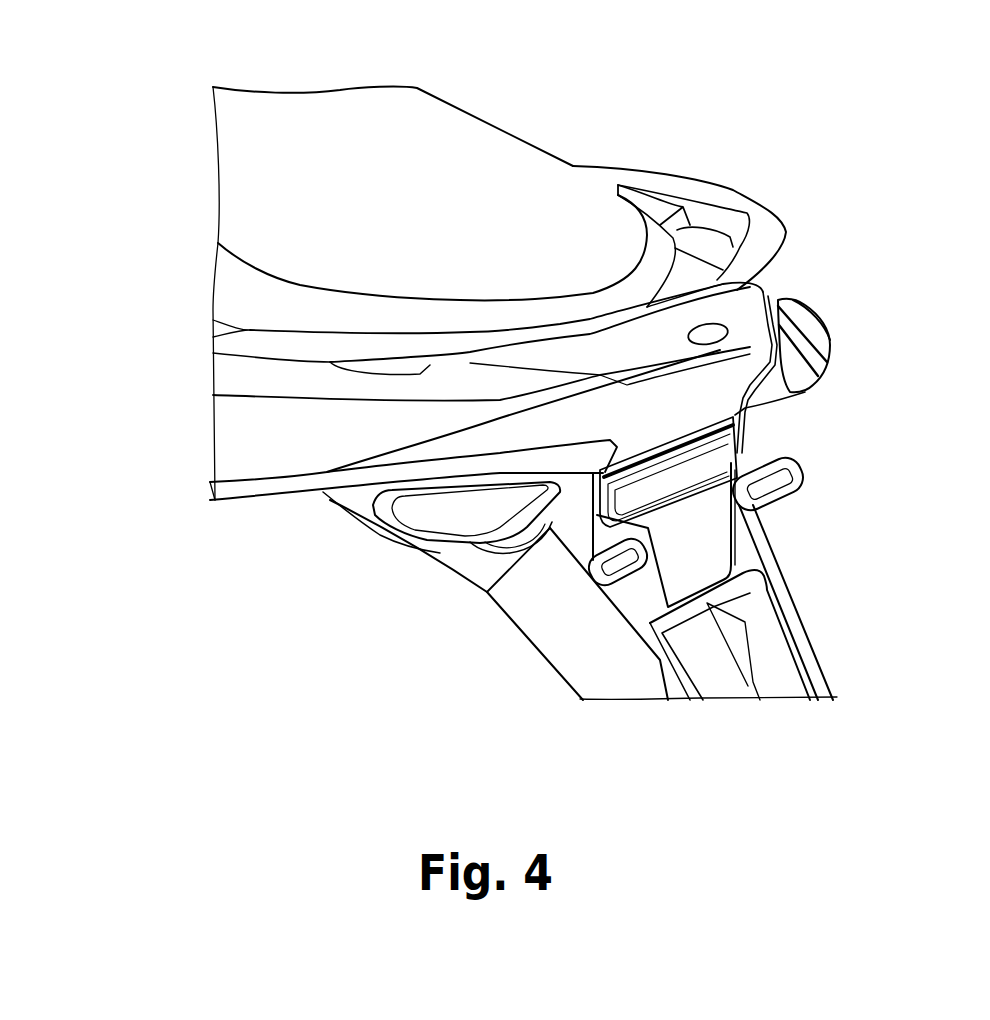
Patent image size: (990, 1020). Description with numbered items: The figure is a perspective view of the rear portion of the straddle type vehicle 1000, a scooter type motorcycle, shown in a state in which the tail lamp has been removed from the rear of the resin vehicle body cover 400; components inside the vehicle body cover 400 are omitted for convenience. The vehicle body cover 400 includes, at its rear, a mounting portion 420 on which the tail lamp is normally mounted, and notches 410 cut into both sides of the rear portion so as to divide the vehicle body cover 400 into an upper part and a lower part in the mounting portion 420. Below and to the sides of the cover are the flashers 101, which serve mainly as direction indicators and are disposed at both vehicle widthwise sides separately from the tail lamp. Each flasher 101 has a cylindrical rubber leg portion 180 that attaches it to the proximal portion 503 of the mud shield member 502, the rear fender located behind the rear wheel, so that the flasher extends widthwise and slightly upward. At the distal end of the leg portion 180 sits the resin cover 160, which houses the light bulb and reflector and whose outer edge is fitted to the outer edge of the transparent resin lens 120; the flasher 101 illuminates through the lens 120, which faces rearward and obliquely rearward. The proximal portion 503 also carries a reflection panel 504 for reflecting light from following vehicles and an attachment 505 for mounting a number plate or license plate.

The straddle type vehicle 1000 is at (722, 117).
The vehicle body cover 400 is at (256, 463).
The notches 410 is at (750, 360).
The mounting portion 420 is at (697, 413).
The flashers 101 is at (830, 335).
The lens 120 is at (832, 357).
The cover 160 is at (800, 391).
The leg portion 180 is at (512, 537).
The mud shield member 502 is at (826, 660).
The proximal portion 503 is at (738, 550).
The reflection panel 504 is at (680, 480).
The attachment 505 is at (777, 500).